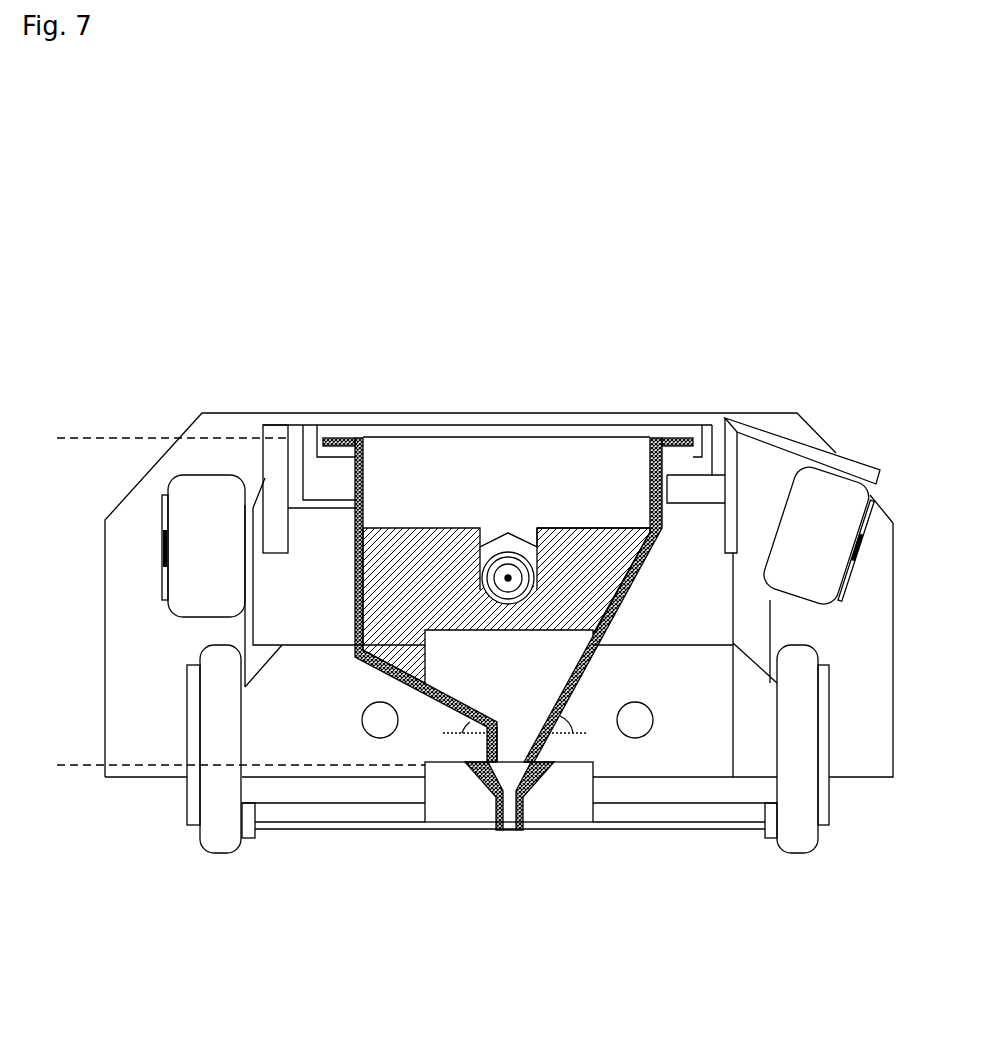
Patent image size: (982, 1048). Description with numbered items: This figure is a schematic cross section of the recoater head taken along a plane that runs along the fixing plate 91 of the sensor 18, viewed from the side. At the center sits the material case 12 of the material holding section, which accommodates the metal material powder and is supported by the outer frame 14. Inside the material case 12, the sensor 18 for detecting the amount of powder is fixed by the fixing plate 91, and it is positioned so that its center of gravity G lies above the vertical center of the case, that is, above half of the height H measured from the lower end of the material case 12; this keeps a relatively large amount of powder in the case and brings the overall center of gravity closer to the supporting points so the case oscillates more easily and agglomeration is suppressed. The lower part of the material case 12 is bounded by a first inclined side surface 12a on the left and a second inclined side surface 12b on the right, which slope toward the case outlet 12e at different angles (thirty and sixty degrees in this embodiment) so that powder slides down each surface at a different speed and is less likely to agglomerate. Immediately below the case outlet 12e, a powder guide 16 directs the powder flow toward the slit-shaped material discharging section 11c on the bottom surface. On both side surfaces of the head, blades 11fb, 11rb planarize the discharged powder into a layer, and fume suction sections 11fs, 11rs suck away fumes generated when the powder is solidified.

The fume suction section 11rs is at (165, 545).
The fume suction section 11fs is at (853, 547).
The blade 11rb is at (202, 842).
The blade 11fb is at (818, 840).
The material discharging section 11c is at (506, 842).
The material case 12 is at (365, 462).
The first inclined side surface 12a is at (357, 653).
The second inclined side surface 12b is at (613, 612).
The case outlet 12e is at (507, 752).
The outer frame 14 is at (327, 480).
The powder guide 16 is at (546, 792).
The sensor 18 is at (507, 532).
The fixing plate 91 is at (577, 528).
The center of gravity G is at (508, 582).
The height H is at (73, 452).